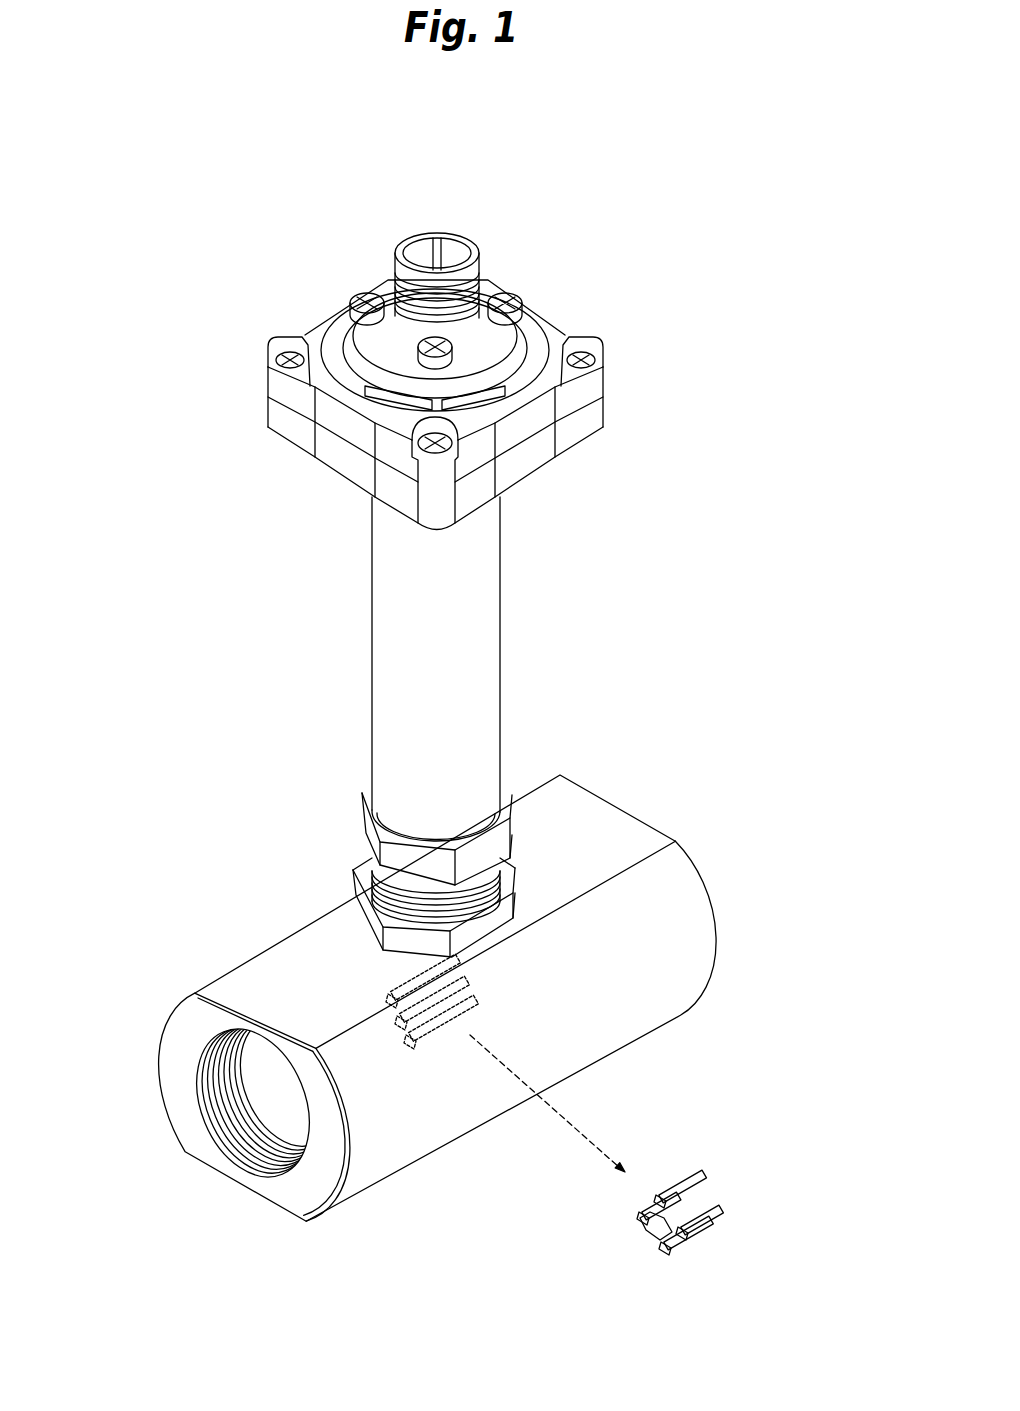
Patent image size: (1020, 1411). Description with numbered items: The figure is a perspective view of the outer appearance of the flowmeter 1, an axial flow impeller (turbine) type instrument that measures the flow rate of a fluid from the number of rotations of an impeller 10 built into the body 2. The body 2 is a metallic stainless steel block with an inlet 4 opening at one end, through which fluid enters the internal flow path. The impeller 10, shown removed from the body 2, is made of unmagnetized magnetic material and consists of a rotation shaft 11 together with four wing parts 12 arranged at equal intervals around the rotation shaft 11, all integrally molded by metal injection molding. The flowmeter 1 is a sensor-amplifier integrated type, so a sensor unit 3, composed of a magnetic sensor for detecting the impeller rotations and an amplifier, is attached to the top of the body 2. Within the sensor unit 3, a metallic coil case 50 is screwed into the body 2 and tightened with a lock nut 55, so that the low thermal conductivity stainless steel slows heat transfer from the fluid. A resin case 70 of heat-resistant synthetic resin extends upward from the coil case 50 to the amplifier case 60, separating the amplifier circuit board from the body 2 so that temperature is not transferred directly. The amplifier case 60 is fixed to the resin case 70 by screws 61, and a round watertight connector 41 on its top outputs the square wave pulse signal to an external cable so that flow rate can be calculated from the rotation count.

The flowmeter 1 is at (690, 113).
The body 2 is at (583, 812).
The sensor unit 3 is at (406, 533).
The inlet 4 is at (203, 1093).
The impeller 10 is at (722, 1172).
The rotation shaft 11 is at (638, 1240).
The wing parts 12 is at (672, 1190).
The round watertight connector 41 is at (414, 240).
The coil case 50 is at (360, 803).
The lock nut 55 is at (358, 898).
The amplifier case 60 is at (523, 292).
The screws 61 is at (272, 348).
The resin case 70 is at (370, 625).